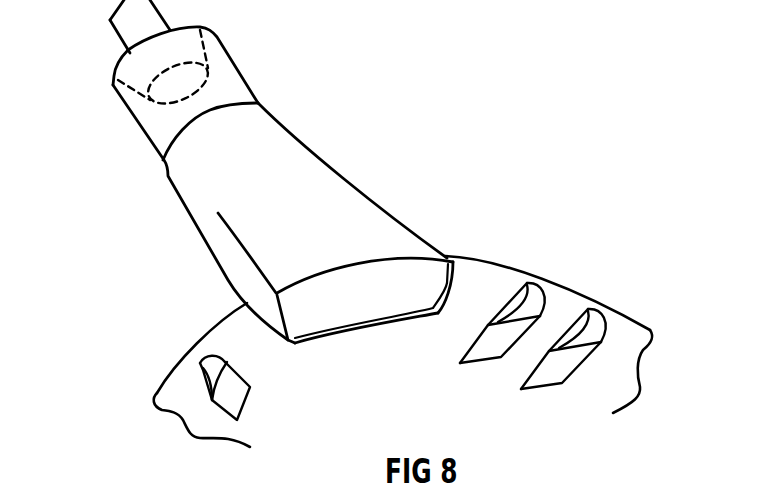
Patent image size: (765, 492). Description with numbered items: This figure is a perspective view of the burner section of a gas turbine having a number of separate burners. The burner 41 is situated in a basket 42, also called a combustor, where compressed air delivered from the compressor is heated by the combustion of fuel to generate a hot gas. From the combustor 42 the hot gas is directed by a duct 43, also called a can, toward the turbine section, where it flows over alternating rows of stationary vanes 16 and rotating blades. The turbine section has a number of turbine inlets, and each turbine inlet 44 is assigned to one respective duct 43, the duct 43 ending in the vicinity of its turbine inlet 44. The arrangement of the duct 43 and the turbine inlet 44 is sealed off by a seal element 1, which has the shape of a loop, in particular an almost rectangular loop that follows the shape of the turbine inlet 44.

The seal element 1 is at (259, 171).
The stationary vanes 16 is at (607, 310).
The burner 41 is at (133, 52).
The basket 42 is at (220, 70).
The duct 43 is at (312, 173).
The turbine inlet 44 is at (387, 288).